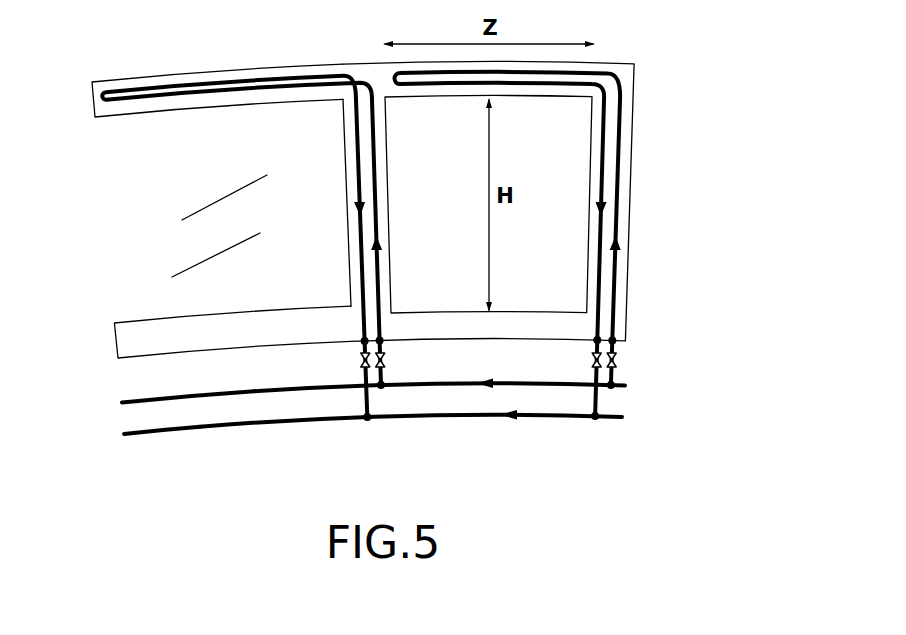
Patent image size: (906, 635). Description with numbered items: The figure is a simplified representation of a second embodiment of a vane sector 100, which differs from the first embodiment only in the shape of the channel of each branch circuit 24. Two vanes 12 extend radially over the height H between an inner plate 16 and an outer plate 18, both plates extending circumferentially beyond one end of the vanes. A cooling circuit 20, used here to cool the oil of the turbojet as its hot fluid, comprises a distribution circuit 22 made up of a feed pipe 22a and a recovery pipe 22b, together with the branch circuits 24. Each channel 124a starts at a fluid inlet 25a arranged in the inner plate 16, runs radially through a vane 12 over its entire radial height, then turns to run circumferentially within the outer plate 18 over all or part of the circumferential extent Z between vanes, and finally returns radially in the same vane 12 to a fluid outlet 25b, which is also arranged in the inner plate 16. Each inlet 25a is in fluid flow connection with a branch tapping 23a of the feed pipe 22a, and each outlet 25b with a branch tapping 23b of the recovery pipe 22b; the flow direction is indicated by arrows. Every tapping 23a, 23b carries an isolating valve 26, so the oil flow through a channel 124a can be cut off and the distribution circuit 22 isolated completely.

The vane sector 100 is at (696, 104).
The outer plate 18 is at (92, 95).
The inner plate 16 is at (116, 340).
The channel 124a is at (376, 140).
The vane 12 is at (357, 160).
The branch circuit 24 is at (374, 233).
The cooling circuit 20 is at (222, 195).
The distribution circuit 22 is at (210, 254).
The feed pipe 22a is at (254, 391).
The recovery pipe 22b is at (200, 425).
The branch tapping 23a is at (383, 388).
The branch tapping 23b is at (367, 420).
The fluid inlet 25a is at (380, 334).
The fluid outlet 25b is at (360, 352).
The isolating valve 26 is at (371, 361).